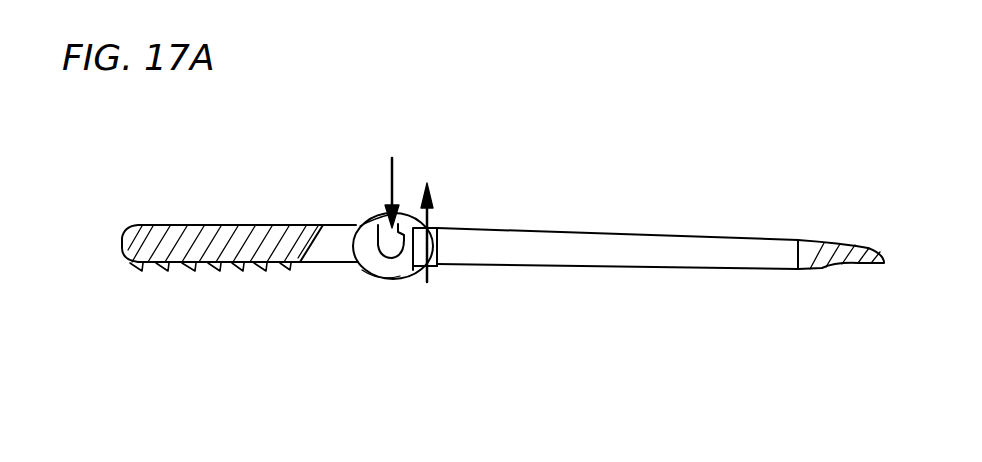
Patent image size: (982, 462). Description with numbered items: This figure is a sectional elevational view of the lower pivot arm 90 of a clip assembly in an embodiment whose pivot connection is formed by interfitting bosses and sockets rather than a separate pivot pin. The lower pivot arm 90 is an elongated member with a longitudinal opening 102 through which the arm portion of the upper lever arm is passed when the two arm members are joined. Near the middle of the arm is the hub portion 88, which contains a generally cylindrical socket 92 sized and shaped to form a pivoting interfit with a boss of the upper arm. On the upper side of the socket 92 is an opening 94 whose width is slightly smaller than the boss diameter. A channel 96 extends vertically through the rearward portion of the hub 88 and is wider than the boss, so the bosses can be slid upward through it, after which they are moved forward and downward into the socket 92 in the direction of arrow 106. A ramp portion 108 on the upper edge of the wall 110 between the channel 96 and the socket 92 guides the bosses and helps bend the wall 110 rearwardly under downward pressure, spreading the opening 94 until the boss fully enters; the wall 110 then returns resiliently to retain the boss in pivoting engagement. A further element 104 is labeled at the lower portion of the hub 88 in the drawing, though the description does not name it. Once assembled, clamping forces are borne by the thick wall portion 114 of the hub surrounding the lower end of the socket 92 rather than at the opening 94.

The lower pivot arm 90 is at (731, 192).
The longitudinal opening 102 is at (587, 244).
The thick wall portion 114 is at (122, 243).
The hub portion 88 is at (352, 268).
The socket 92 is at (368, 270).
The opening 94 is at (373, 212).
The wall 110 is at (403, 263).
The channel 96 is at (437, 265).
The slot bottom 104 is at (430, 270).
The arrow 106 is at (390, 178).
The ramp portion 108 is at (405, 230).